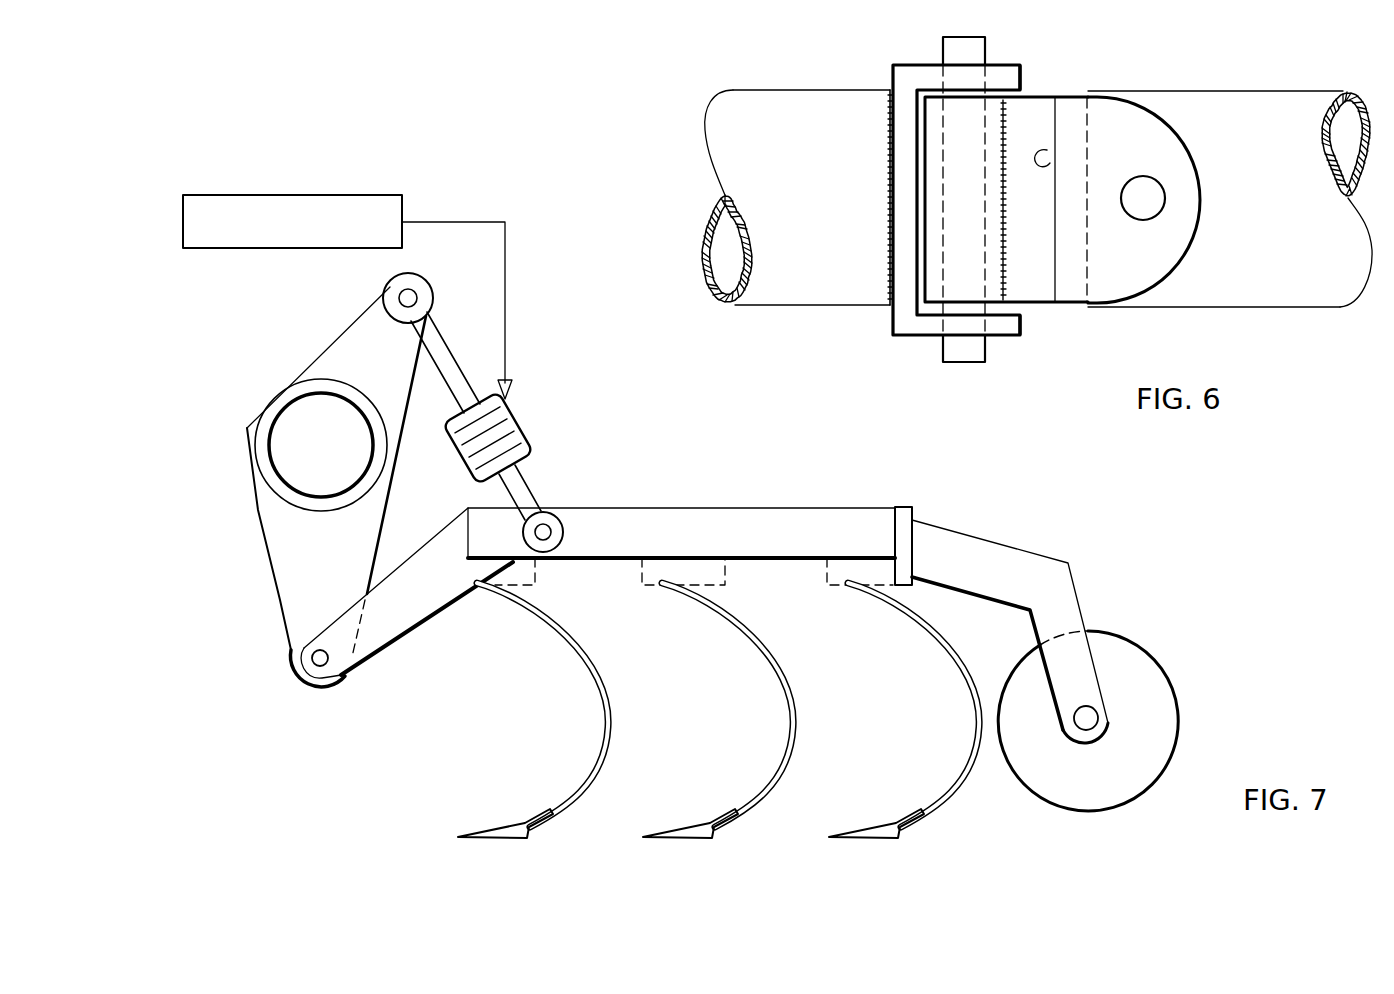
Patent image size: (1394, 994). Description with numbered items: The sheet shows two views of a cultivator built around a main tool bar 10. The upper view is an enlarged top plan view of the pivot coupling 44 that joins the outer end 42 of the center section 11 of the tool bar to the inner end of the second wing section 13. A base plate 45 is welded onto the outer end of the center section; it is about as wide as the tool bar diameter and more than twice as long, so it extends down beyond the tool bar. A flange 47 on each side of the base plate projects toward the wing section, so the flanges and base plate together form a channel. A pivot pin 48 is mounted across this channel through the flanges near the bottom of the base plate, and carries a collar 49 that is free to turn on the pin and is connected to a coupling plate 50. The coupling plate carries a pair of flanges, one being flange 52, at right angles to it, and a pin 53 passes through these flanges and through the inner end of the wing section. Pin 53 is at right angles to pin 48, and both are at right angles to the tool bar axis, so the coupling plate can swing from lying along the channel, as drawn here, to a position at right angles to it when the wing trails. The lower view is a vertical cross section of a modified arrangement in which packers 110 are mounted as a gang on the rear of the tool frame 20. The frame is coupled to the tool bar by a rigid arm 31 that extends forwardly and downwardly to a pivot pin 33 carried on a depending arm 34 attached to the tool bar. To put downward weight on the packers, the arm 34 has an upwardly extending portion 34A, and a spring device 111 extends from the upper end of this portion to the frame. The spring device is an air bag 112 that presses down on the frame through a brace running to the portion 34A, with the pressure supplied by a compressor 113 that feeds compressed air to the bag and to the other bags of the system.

In FIG. 7, the main tool bar 10 is at (277, 492).
In FIG. 6, the center section 11 is at (760, 92).
In FIG. 6, the second wing section 13 is at (1238, 80).
In FIG. 7, the frame 20 is at (727, 486).
In FIG. 7, the rigid arm 31 is at (403, 598).
In FIG. 7, the pivot pin 33 is at (317, 660).
In FIG. 7, the depending arm 34 is at (297, 573).
In FIG. 7, the upwardly extending portion 34A is at (352, 328).
In FIG. 6, the outer end 42 is at (890, 133).
In FIG. 6, the pivot coupling 44 is at (1050, 70).
In FIG. 6, the base plate 45 is at (905, 195).
In FIG. 6, the flange 47 is at (1002, 77).
In FIG. 6, the pivot pin 48 is at (959, 38).
In FIG. 6, the collar 49 is at (997, 137).
In FIG. 6, the coupling plate 50 is at (1048, 162).
In FIG. 6, the flange 52 is at (1167, 153).
In FIG. 6, the pin 53 is at (1157, 197).
In FIG. 7, the packers 110 is at (1151, 717).
In FIG. 7, the spring device 111 is at (536, 466).
In FIG. 7, the air bag 112 is at (508, 428).
In FIG. 7, the compressor 113 is at (293, 186).